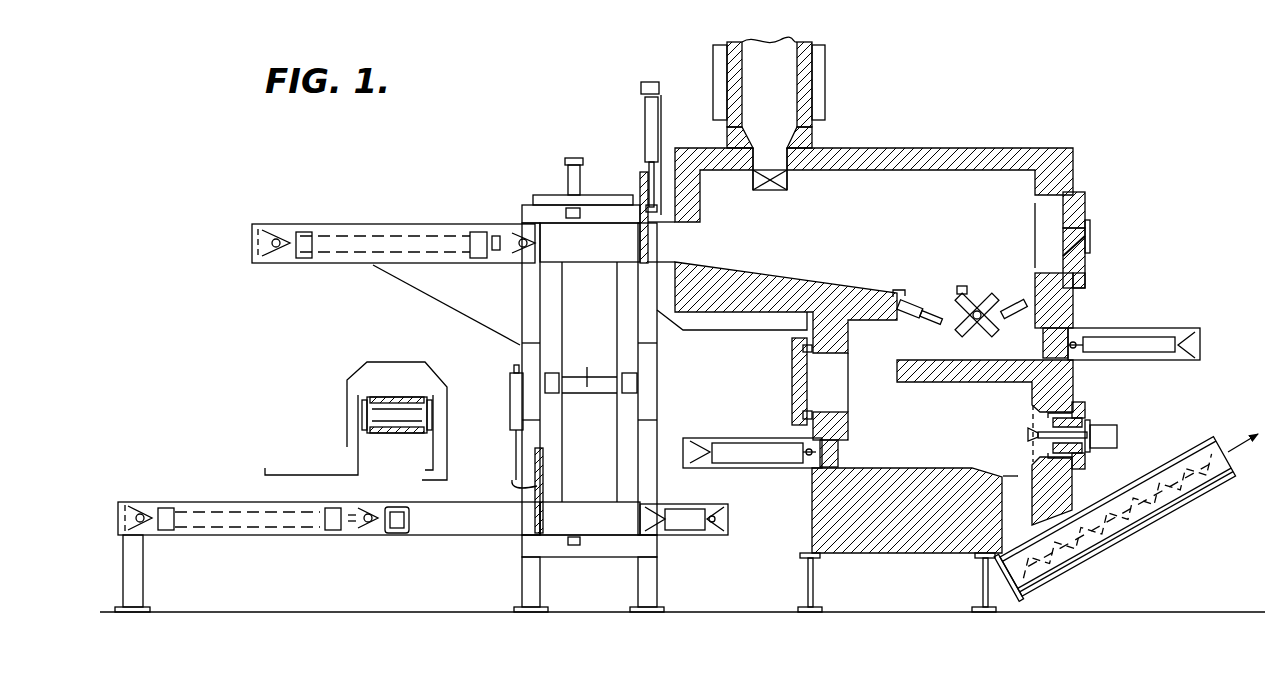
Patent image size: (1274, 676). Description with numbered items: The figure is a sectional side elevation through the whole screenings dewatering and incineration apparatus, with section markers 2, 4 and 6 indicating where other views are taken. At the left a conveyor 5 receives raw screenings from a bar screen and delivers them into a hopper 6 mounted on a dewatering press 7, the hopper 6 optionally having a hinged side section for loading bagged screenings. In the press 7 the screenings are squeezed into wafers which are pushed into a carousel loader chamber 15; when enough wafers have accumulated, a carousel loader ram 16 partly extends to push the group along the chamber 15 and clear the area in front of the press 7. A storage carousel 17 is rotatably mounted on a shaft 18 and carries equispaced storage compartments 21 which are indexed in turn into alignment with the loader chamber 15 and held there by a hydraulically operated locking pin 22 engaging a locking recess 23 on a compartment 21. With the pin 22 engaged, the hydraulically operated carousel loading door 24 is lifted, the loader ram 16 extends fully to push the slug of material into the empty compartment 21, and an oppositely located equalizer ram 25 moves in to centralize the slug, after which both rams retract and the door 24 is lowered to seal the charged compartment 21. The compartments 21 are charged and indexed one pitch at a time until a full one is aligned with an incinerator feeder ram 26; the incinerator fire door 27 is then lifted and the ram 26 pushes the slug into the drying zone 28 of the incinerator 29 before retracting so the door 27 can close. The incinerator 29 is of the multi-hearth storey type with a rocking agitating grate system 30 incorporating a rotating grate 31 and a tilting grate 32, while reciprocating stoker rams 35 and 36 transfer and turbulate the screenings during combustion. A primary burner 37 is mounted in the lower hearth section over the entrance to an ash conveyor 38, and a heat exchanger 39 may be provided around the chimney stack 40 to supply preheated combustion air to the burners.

The section line II-II 2 is at (398, 380).
The section line IV-IV 4 is at (575, 157).
The conveyor 5 is at (408, 390).
The hopper 6 is at (880, 243).
The dewatering press 7 is at (396, 540).
The carousel loader chamber 15 is at (462, 517).
The carousel loader ram 16 is at (367, 538).
The storage carousel 17 is at (660, 411).
The shaft 18 is at (589, 403).
The storage compartments 21 is at (602, 243).
The locking pin 22 is at (577, 220).
The locking recess 23 is at (580, 220).
The carousel loading door 24 is at (538, 510).
The equalizer ram 25 is at (656, 528).
The incinerator feeder ram 26 is at (520, 230).
The incinerator fire door 27 is at (650, 244).
The drying zone 28 is at (956, 237).
The incinerator 29 is at (920, 145).
The agitating grate system 30 is at (985, 287).
The rotating grate 31 is at (963, 290).
The tilting grate 32 is at (923, 313).
The stoker ram 35 is at (1076, 330).
The stoker ram 36 is at (842, 465).
The primary burner 37 is at (1027, 435).
The ash conveyor 38 is at (1108, 533).
The heat exchanger 39 is at (822, 100).
The chimney stack 40 is at (782, 75).